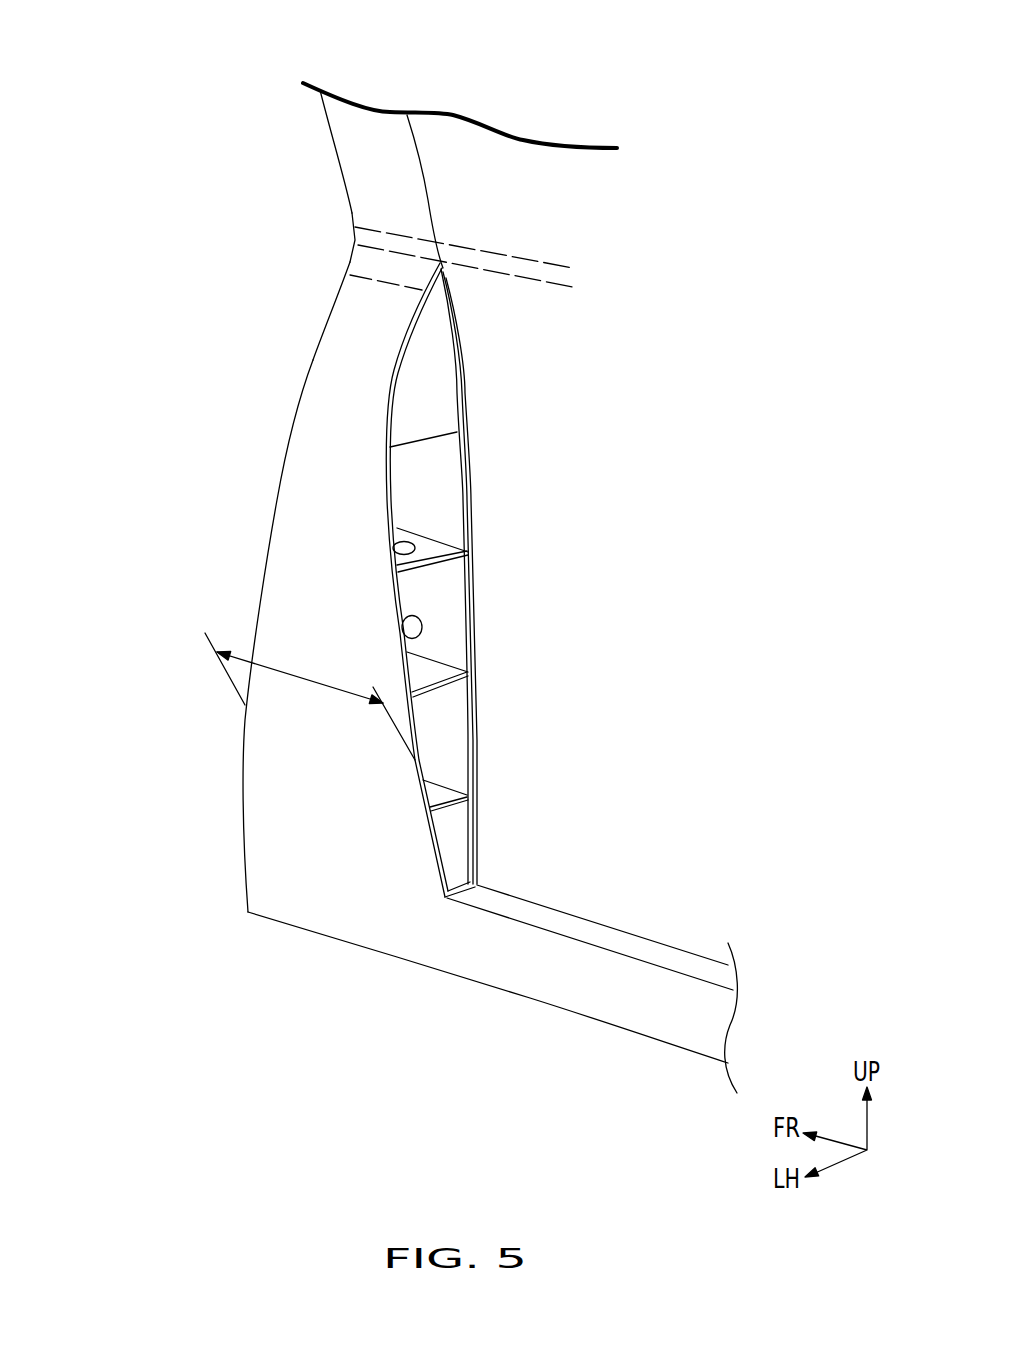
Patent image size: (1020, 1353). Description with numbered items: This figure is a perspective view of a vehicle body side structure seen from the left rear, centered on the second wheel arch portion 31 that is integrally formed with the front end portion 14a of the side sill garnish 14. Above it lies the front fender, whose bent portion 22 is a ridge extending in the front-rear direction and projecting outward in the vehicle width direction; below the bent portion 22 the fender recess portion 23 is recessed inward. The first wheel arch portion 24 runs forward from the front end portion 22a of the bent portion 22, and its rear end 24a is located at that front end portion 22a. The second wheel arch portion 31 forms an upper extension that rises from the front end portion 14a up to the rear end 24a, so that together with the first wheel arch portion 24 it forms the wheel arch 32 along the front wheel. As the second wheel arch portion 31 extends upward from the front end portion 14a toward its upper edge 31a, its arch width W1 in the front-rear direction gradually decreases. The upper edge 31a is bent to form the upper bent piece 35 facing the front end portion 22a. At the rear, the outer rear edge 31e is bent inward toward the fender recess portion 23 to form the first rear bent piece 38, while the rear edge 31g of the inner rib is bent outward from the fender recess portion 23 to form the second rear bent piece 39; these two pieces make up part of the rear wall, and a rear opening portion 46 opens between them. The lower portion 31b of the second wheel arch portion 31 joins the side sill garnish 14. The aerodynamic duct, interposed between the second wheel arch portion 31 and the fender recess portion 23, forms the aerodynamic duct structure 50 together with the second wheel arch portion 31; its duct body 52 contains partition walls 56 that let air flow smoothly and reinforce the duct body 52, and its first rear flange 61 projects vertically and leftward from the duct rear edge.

The side sill garnish 14 is at (642, 930).
The front end portion 14a is at (408, 940).
The bent portion 22 is at (513, 255).
The front end portion 22a is at (400, 238).
The fender recess portion 23 is at (508, 432).
The first wheel arch portion 24 is at (392, 127).
The rear end 24a is at (479, 135).
The second wheel arch portion 31 is at (297, 400).
The upper edge 31a is at (290, 204).
The center pillar lower portion 31b is at (298, 467).
The rear edge 31e is at (377, 502).
The rear edge 31g is at (475, 532).
The wheel arch 32 is at (337, 300).
The upper bent piece 35 is at (352, 237).
The first rear bent piece 38 is at (393, 550).
The second rear bent piece 39 is at (547, 564).
The rear opening portion 46 is at (395, 640).
The aerodynamic duct structure 50 is at (298, 352).
The duct body 52 is at (437, 602).
The partition wall 56 is at (430, 665).
The first rear flange 61 is at (435, 372).
The arch width W1 is at (300, 677).